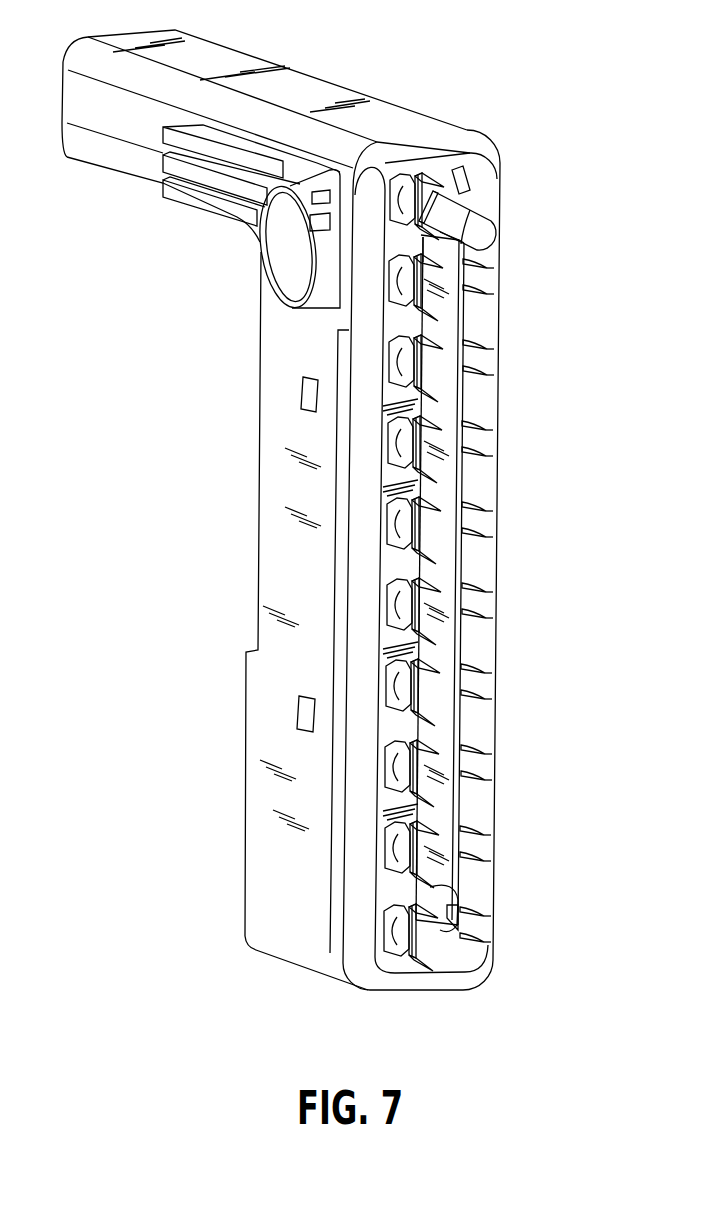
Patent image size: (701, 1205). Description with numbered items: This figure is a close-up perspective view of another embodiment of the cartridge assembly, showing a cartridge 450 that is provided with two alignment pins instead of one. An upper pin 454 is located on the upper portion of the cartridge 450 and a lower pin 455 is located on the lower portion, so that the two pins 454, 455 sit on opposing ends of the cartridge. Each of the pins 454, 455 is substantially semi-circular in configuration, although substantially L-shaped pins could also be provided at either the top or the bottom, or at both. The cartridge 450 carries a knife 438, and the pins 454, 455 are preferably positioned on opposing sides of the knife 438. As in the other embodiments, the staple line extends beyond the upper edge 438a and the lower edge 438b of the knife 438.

The cartridge 450 is at (348, 85).
The knife 438 is at (443, 603).
The upper edge 438a is at (468, 207).
The lower edge 438b is at (455, 903).
The upper pin 454 is at (487, 237).
The lower pin 455 is at (453, 930).